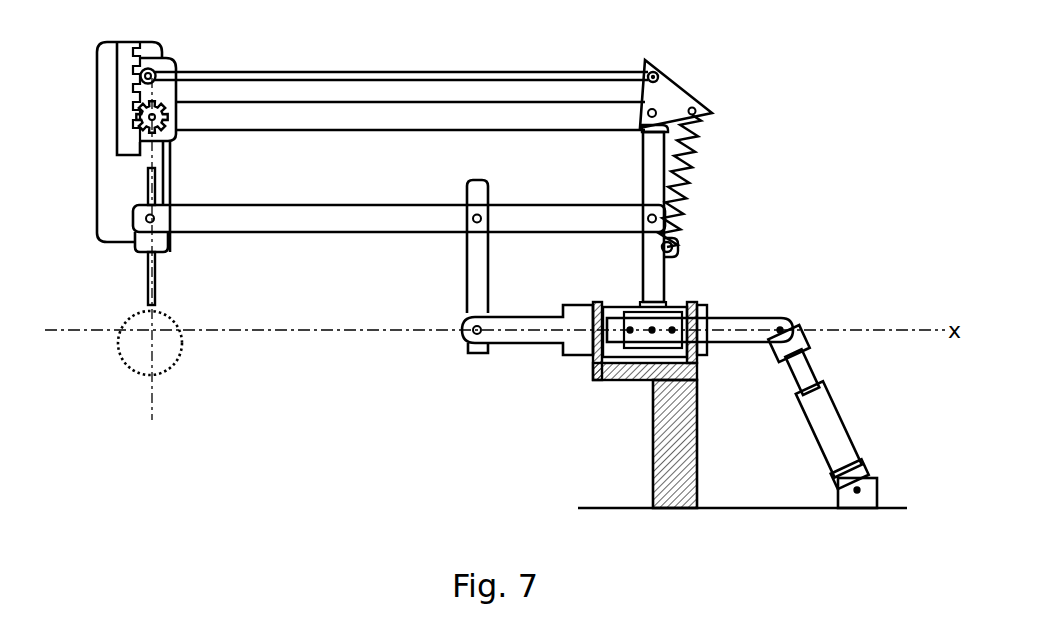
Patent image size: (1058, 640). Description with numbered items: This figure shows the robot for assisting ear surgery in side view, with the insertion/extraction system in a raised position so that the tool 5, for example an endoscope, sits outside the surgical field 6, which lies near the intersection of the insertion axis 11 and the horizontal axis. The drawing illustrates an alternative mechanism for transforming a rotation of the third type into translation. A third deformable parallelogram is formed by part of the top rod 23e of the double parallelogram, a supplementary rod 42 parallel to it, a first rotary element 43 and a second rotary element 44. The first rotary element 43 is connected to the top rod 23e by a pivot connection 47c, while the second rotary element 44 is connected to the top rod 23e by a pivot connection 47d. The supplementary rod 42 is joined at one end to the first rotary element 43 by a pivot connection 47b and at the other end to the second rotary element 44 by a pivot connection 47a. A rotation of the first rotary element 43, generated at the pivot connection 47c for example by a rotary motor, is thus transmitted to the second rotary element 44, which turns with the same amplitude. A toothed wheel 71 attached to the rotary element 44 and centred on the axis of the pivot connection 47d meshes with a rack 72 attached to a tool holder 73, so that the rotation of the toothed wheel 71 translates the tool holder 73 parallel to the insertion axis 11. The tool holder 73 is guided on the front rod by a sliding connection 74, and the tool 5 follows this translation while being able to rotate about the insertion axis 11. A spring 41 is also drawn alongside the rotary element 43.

The tool 5 is at (155, 280).
The surgical field 6 is at (118, 342).
The insertion axis 11 is at (152, 378).
The top rod 23e is at (438, 128).
The spring 41 is at (690, 170).
The supplementary rod 42 is at (438, 73).
The first rotary element 43 is at (665, 92).
The second rotary element 44 is at (172, 65).
The pivot connection 47a is at (150, 70).
The pivot connection 47b is at (645, 62).
The pivot connection 47c is at (642, 132).
The pivot connection 47d is at (158, 130).
The toothed wheel 71 is at (170, 123).
The rack 72 is at (130, 93).
The tool holder 73 is at (113, 214).
The sliding connection 74 is at (147, 178).